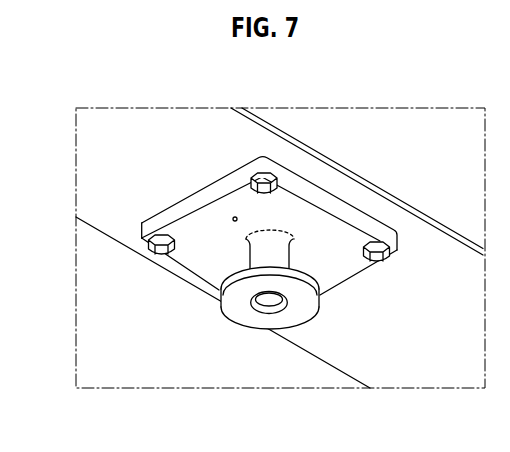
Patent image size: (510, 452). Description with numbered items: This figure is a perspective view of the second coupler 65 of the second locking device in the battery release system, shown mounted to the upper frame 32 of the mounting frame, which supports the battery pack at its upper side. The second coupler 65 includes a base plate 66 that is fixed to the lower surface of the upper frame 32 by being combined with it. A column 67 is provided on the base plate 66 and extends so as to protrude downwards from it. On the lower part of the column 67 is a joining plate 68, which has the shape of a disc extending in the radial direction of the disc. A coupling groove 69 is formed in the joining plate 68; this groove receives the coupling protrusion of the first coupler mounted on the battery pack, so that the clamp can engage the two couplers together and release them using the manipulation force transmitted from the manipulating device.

The upper frame 32 is at (418, 357).
The second coupler 65 is at (217, 256).
The base plate 66 is at (308, 203).
The column 67 is at (262, 255).
The joining plate 68 is at (278, 323).
The coupling groove 69 is at (269, 302).